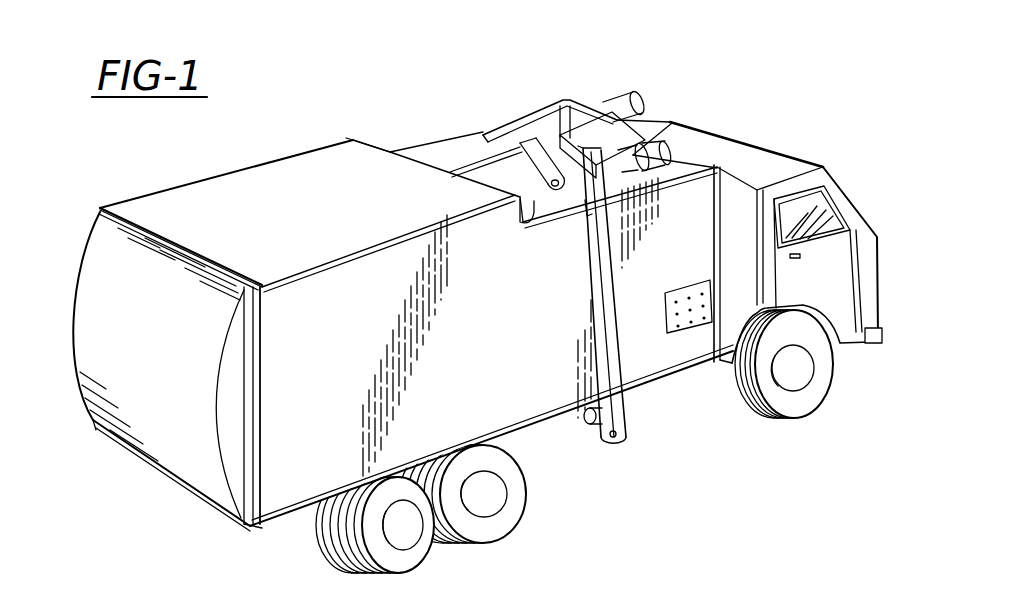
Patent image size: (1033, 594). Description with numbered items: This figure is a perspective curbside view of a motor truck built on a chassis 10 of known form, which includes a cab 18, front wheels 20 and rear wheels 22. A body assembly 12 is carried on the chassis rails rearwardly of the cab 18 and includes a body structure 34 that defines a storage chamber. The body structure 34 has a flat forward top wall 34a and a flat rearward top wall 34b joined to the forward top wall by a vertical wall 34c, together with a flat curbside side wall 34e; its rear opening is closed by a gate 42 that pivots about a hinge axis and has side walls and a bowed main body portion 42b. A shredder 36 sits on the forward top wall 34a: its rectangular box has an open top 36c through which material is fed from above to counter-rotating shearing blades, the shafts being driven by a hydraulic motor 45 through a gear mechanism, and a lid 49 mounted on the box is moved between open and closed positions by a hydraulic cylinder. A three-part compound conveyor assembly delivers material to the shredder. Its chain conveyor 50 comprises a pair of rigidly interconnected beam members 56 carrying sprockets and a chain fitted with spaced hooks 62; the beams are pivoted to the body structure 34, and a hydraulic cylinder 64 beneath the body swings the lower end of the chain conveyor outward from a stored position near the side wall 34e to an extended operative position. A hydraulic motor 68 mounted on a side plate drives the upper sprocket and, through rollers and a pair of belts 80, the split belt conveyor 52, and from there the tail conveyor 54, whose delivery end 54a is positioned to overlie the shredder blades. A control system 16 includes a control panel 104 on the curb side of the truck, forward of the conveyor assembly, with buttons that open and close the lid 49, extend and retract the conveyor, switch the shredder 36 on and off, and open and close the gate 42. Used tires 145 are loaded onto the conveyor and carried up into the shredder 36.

The chassis 10 is at (171, 143).
The body assembly 12 is at (326, 170).
The control system 16 is at (726, 302).
The cab 18 is at (823, 166).
The front wheels 20 is at (820, 388).
The rear wheels 22 is at (322, 543).
The body structure 34 is at (381, 118).
The forward top wall 34a is at (698, 160).
The rearward top wall 34b is at (324, 224).
The vertical wall 34c is at (531, 218).
The side wall 34e is at (462, 389).
The shredder 36 is at (492, 108).
The open top 36c is at (551, 121).
The gate 42 is at (202, 464).
The bowed main body portion 42b is at (125, 432).
The hydraulic motor 45 is at (637, 92).
The lid 49 is at (447, 150).
The chain conveyor 50 is at (580, 358).
The split belt conveyor 52 is at (536, 156).
The tail conveyor 54 is at (502, 593).
The delivery end 54a is at (548, 593).
The beam members 56 is at (592, 265).
The hooks 62 is at (621, 372).
The hydraulic cylinder 64 is at (590, 422).
The hydraulic motor 68 is at (665, 141).
The belts 80 is at (593, 135).
The control panel 104 is at (690, 330).
The used tires 145 is at (620, 585).